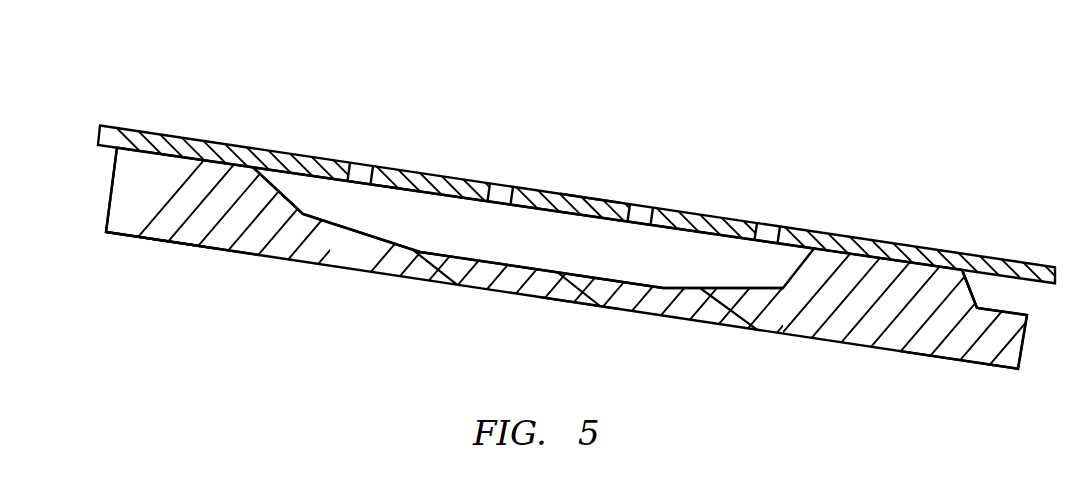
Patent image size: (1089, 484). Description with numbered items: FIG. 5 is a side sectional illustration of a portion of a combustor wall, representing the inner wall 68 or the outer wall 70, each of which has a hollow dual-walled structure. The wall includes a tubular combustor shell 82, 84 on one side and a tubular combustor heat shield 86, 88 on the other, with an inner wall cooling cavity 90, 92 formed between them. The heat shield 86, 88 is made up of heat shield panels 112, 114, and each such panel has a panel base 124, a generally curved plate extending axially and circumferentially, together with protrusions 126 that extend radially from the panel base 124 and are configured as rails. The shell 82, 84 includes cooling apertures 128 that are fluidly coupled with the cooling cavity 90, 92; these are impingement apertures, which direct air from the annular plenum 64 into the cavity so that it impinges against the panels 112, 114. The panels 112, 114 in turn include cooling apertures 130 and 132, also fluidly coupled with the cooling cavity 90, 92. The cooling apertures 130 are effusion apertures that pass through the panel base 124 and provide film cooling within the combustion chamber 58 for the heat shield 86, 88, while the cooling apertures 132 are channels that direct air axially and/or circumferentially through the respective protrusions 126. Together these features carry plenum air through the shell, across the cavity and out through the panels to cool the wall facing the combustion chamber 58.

The combustion chamber 58 is at (593, 375).
The annular plenum 64 is at (602, 164).
The inner wall 68 is at (552, 266).
The outer wall 70 is at (552, 266).
The tubular combustor shell 82 is at (589, 266).
The tubular combustor shell 84 is at (173, 136).
The tubular combustor heat shield 86 is at (203, 294).
The tubular combustor heat shield 88 is at (185, 255).
The inner wall cooling cavity 90 is at (541, 268).
The inner wall cooling cavity 92 is at (367, 220).
The heat shield panel 112 is at (133, 277).
The heat shield panel 114 is at (128, 238).
The panel base 124 is at (277, 238).
The protrusion 126 is at (257, 168).
The cooling aperture 128 is at (363, 172).
The cooling aperture 130 is at (443, 270).
The cooling aperture 132 is at (903, 277).